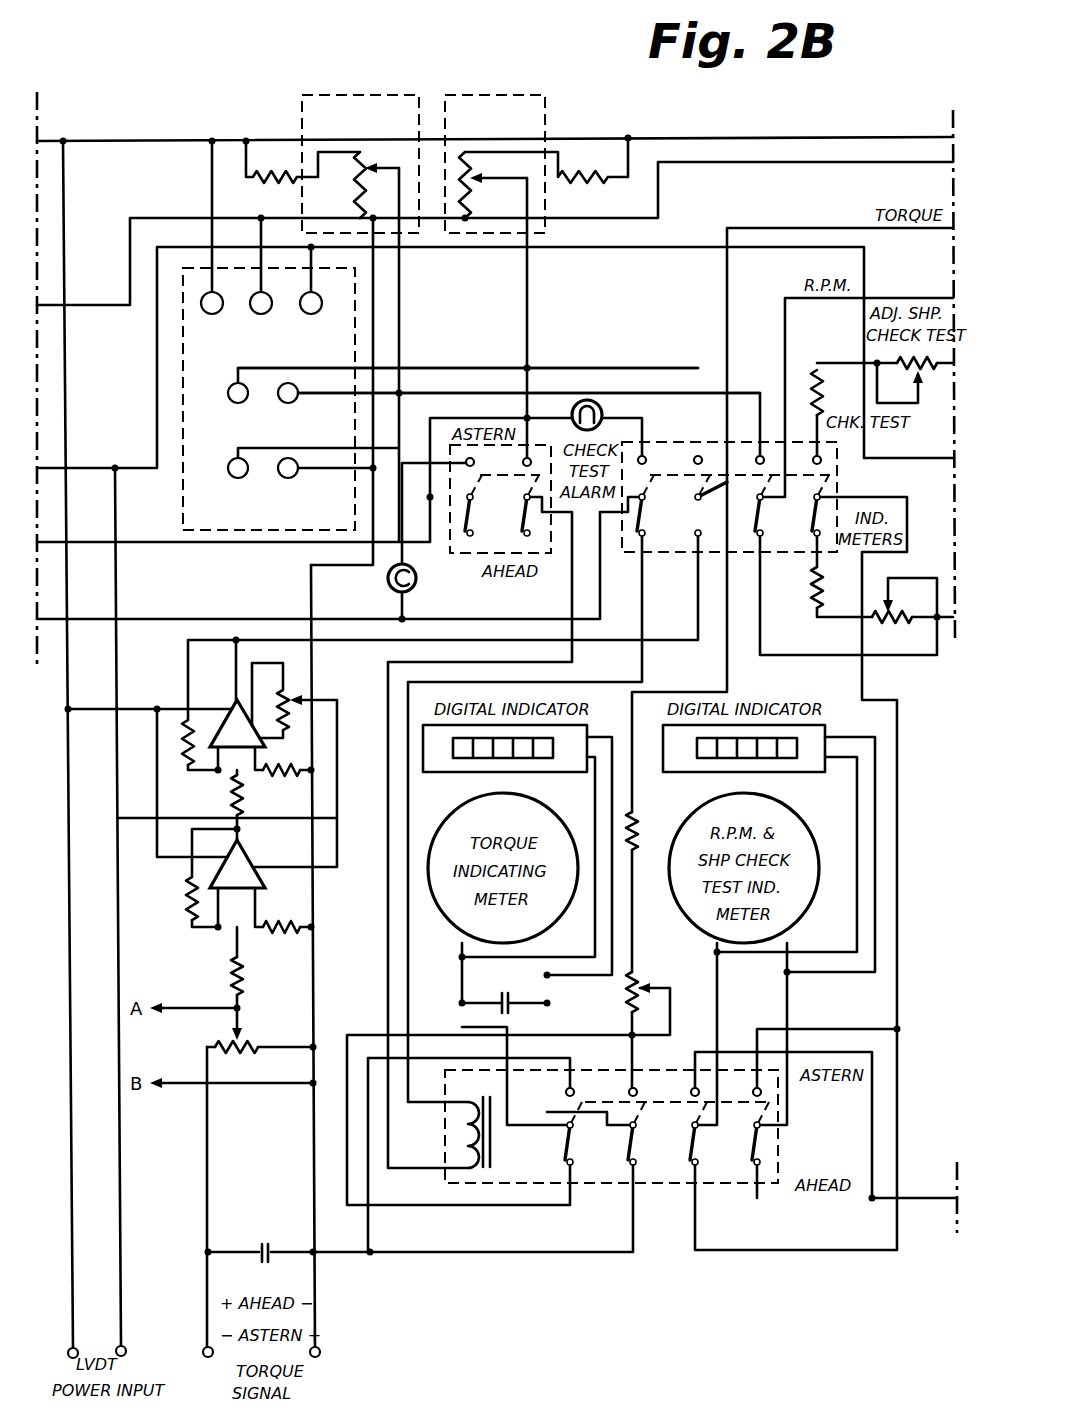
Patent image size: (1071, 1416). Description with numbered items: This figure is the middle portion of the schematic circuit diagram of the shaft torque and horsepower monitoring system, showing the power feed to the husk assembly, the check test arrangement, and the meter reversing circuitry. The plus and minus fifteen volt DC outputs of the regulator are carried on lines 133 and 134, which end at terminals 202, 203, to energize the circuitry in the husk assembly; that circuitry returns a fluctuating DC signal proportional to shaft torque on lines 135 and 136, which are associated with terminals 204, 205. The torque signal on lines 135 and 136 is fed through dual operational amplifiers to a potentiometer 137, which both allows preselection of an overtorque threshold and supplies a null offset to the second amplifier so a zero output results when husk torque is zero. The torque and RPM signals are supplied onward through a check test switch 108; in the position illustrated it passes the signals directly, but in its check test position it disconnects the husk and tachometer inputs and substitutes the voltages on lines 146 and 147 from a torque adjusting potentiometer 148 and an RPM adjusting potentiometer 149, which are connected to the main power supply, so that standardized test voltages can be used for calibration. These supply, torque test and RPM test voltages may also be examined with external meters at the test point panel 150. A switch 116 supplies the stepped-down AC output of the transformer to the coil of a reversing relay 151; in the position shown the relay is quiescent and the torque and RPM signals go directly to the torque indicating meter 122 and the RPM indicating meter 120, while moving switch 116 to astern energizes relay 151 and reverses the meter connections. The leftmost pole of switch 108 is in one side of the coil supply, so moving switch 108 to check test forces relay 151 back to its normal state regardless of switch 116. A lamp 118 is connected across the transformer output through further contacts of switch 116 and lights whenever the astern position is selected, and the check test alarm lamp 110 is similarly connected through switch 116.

The check test switch 108 is at (838, 477).
The check test alarm lamp 110 is at (593, 401).
The switch 116 is at (456, 556).
The lamp 118 is at (390, 585).
The RPM indicating meter 120 is at (795, 812).
The torque indicating meter 122 is at (449, 823).
The line 133 is at (85, 758).
The line 134 is at (116, 789).
The line 135 is at (210, 1137).
The line 136 is at (313, 1175).
The potentiometer 137 is at (287, 686).
The line 146 is at (600, 368).
The line 147 is at (470, 392).
The torque adjusting potentiometer 148 is at (548, 113).
The RPM adjusting potentiometer 149 is at (300, 113).
The test point panel 150 is at (182, 386).
The reversing relay 151 is at (497, 1187).
The LVDT power input terminal 202 is at (78, 1345).
The LVDT power input terminal 203 is at (125, 1345).
The torque signal terminal 204 is at (206, 1360).
The torque signal terminal 205 is at (320, 1347).